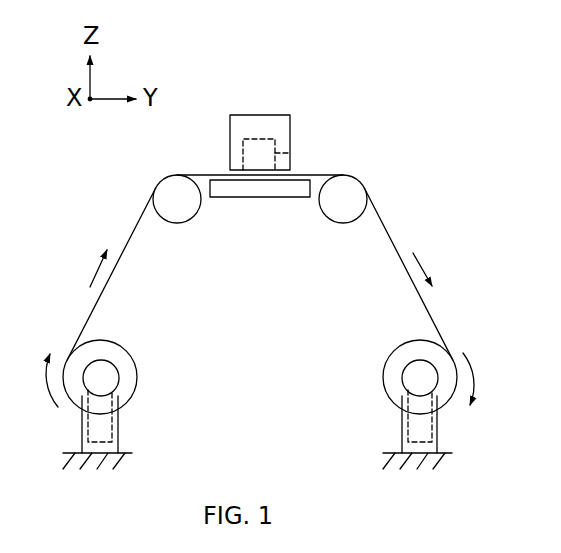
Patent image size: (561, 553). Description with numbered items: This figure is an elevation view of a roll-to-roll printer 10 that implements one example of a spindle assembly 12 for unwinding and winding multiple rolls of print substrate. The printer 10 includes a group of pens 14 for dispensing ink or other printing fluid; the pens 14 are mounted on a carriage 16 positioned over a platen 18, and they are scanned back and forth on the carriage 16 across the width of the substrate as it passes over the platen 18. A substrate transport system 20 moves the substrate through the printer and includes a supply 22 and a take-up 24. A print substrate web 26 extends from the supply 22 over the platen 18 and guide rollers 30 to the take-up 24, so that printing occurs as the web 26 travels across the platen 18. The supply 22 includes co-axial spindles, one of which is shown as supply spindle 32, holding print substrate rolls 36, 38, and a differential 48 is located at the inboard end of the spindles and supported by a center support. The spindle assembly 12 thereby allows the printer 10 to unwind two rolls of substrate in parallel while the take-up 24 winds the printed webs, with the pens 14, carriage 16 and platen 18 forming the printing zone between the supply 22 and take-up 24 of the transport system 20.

The roll-to-roll printer 10 is at (304, 72).
The spindle assembly 12 is at (134, 430).
The pens 14 is at (290, 153).
The carriage 16 is at (258, 113).
The platen 18 is at (258, 199).
The substrate transport system 20 is at (120, 321).
The supply 22 is at (150, 351).
The take-up 24 is at (368, 351).
The print substrate web 26 is at (133, 224).
The guide rollers 30 is at (175, 213).
The supply spindle 32 is at (106, 375).
The print substrate roll 36 is at (127, 390).
The print substrate roll 38 is at (393, 390).
The differential 48 is at (78, 432).